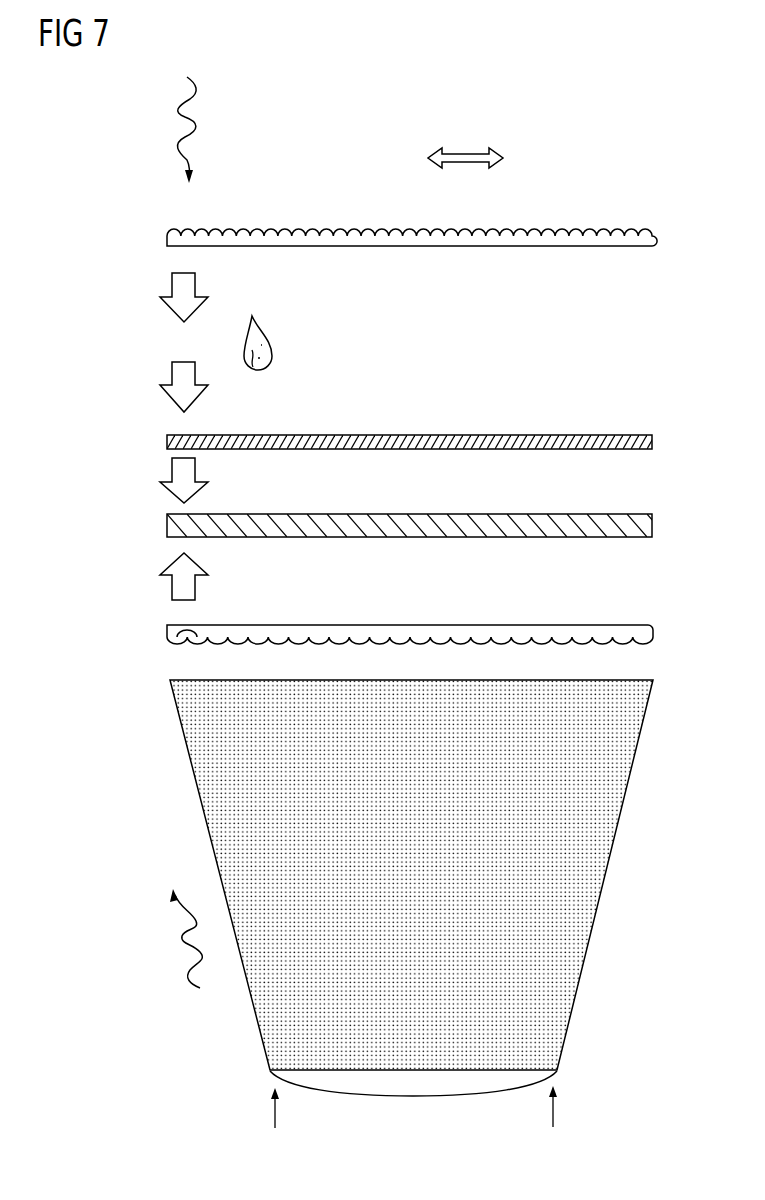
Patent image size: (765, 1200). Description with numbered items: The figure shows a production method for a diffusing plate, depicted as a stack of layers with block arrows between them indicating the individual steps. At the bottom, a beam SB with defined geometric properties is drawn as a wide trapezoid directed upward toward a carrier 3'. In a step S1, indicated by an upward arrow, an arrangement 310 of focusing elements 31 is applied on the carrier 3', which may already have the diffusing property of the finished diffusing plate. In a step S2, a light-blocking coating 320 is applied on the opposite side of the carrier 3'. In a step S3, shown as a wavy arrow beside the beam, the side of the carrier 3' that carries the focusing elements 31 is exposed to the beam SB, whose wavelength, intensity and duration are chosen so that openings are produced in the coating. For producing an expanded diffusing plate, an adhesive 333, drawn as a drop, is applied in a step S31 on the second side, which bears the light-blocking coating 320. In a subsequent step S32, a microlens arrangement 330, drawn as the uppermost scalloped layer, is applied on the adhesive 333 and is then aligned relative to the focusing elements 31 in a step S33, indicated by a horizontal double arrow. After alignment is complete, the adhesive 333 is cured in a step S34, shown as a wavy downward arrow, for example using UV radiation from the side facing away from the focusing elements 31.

The microlens arrangement 330 is at (167, 237).
The step S32 is at (182, 282).
The adhesive 333 is at (245, 344).
The step S31 is at (182, 370).
The light-blocking coating 320 is at (167, 440).
The step S2 is at (182, 475).
The carrier 3' is at (368, 524).
The step S1 is at (182, 592).
The arrangement of focusing elements 310 is at (176, 634).
The focusing elements 31 is at (185, 643).
The beam SB is at (215, 780).
The step S3 is at (158, 942).
The step S34 is at (152, 112).
The step S33 is at (462, 150).